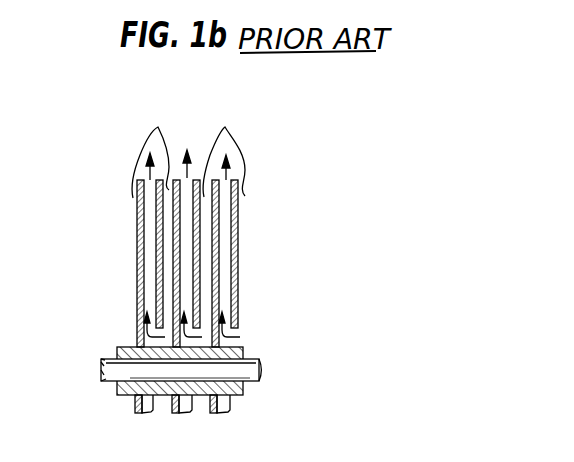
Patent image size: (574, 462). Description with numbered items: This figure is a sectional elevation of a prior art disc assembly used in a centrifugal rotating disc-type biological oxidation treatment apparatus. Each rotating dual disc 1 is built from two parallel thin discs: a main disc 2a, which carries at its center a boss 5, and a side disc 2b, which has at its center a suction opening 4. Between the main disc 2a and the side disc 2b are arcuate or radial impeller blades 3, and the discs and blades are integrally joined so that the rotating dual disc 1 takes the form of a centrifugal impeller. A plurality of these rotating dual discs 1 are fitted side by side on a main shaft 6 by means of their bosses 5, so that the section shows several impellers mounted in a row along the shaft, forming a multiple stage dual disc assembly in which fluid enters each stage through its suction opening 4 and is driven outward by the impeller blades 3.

The rotating dual disc 1 is at (217, 296).
The main disc 2a is at (150, 147).
The side disc 2b is at (224, 146).
The impeller blades 3 is at (223, 272).
The suction opening 4 is at (232, 336).
The boss 5 is at (243, 353).
The main shaft 6 is at (247, 372).